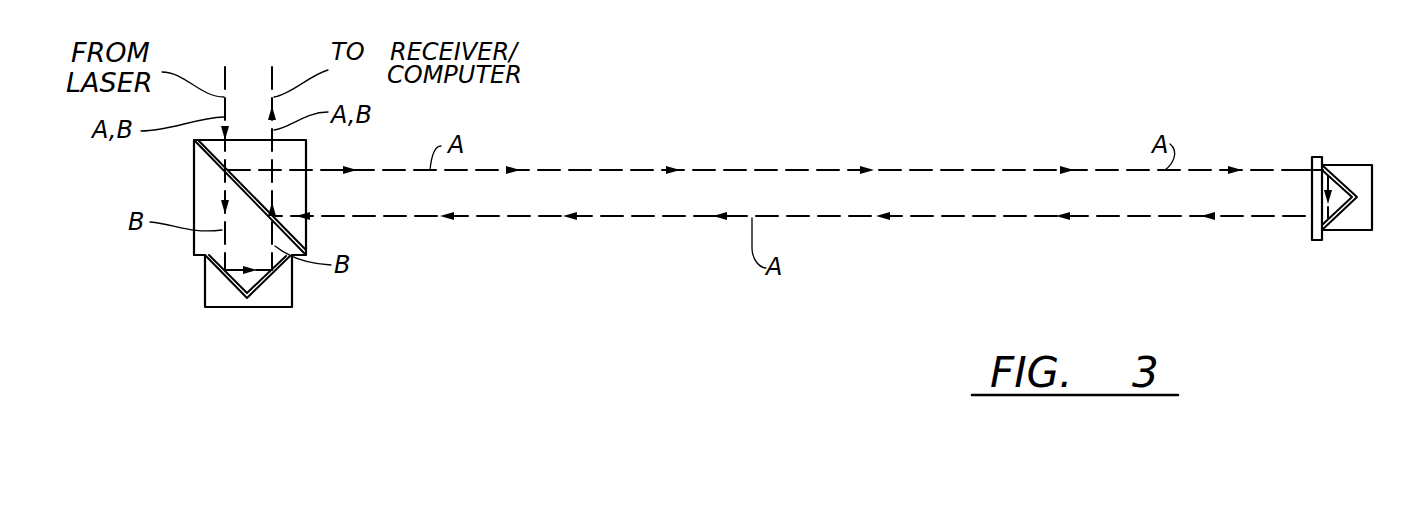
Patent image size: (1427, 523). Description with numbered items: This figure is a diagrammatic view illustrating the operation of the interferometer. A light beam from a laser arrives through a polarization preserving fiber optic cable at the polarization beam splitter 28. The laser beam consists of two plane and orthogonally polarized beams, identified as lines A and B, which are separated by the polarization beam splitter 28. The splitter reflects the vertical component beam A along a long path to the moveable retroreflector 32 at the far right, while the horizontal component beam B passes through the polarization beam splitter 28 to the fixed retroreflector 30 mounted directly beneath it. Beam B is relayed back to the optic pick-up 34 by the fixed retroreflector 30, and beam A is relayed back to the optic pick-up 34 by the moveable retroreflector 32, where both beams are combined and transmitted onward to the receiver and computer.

The polarization beam splitter 28 is at (186, 194).
The fixed retroreflector 30 is at (292, 290).
The moveable retroreflector 32 is at (1360, 230).
The optic pick-up 34 is at (308, 157).